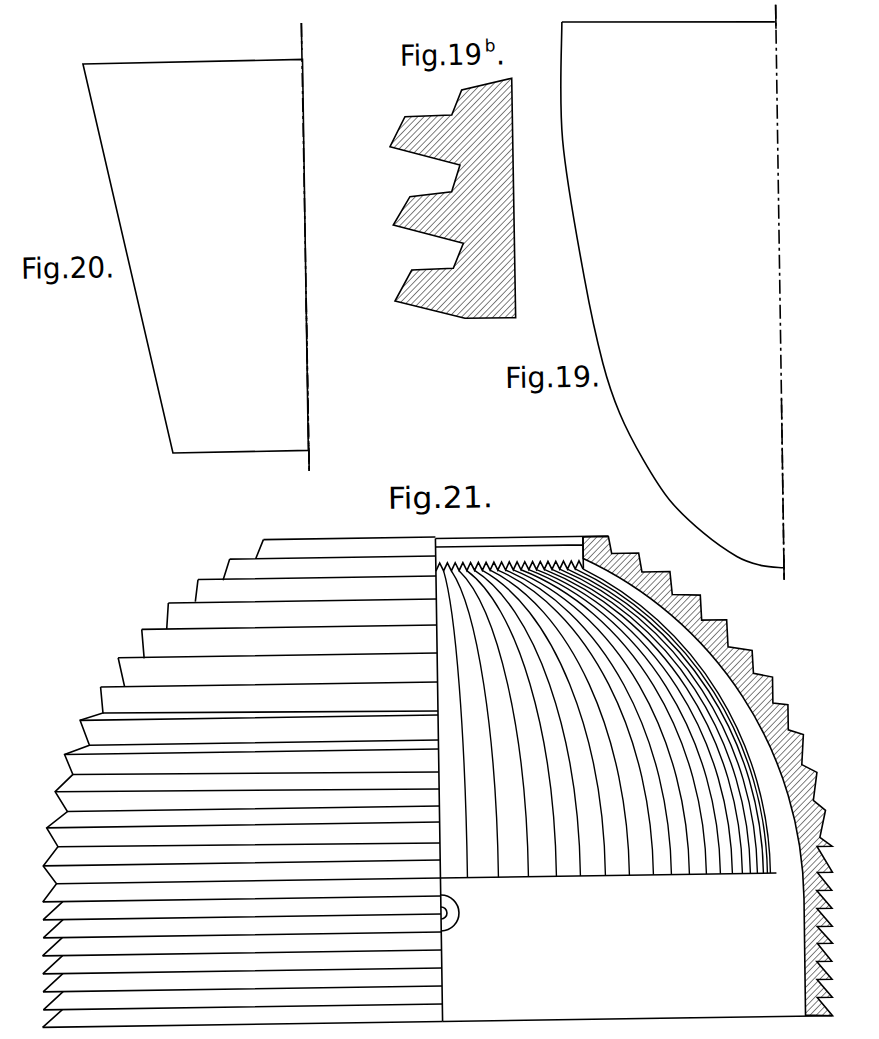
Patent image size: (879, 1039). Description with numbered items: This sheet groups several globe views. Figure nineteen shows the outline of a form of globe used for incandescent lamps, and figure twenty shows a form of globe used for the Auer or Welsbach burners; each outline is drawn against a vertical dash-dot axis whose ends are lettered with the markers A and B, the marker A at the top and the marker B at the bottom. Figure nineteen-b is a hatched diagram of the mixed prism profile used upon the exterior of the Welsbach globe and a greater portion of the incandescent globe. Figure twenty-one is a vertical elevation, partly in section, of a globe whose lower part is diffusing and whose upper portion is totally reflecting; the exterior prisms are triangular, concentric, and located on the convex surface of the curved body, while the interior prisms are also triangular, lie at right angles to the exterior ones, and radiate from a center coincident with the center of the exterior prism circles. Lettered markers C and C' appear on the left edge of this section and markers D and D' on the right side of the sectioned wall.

In FIG. 20, the section line end A is at (314, 246).
In FIG. 19, the section line end A is at (791, 290).
In FIG. 20, the section line end B is at (316, 388).
In FIG. 19, the section line end B is at (792, 496).
In FIG. 21, the section line C-C' C is at (248, 879).
In FIG. 21, the section line C- C' is at (242, 1017).
In FIG. 21, the section line D-D' D is at (617, 866).
In FIG. 21, the section line D- D' is at (637, 1006).